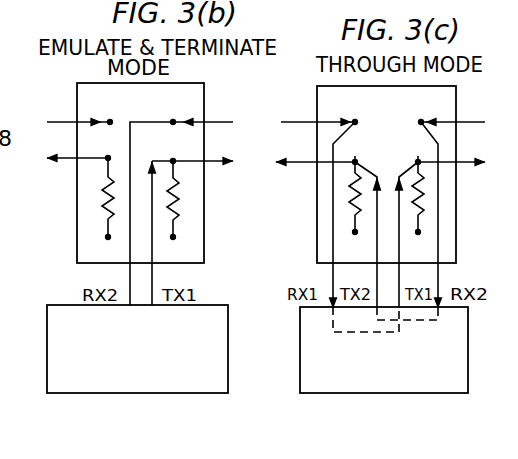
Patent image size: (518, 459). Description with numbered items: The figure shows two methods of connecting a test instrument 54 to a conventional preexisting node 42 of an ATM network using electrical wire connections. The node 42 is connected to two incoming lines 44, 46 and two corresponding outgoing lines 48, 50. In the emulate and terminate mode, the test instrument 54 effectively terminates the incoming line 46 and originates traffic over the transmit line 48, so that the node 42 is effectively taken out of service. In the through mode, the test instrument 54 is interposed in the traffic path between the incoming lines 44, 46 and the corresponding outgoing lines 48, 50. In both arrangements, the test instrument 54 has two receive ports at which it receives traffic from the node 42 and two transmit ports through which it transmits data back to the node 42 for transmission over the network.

In FIG. 3B, the node 42 is at (77, 248).
In FIG. 3B, the incoming line 44 is at (60, 122).
In FIG. 3C, the incoming line 44 is at (301, 118).
In FIG. 3B, the incoming line 46 is at (220, 123).
In FIG. 3C, the incoming line 46 is at (469, 122).
In FIG. 3B, the outgoing line 48 is at (216, 163).
In FIG. 3C, the outgoing line 48 is at (466, 165).
In FIG. 3B, the outgoing line 50 is at (63, 160).
In FIG. 3C, the outgoing line 50 is at (301, 165).
In FIG. 3B, the test instrument 54 is at (47, 365).
In FIG. 3C, the test instrument 54 is at (300, 363).